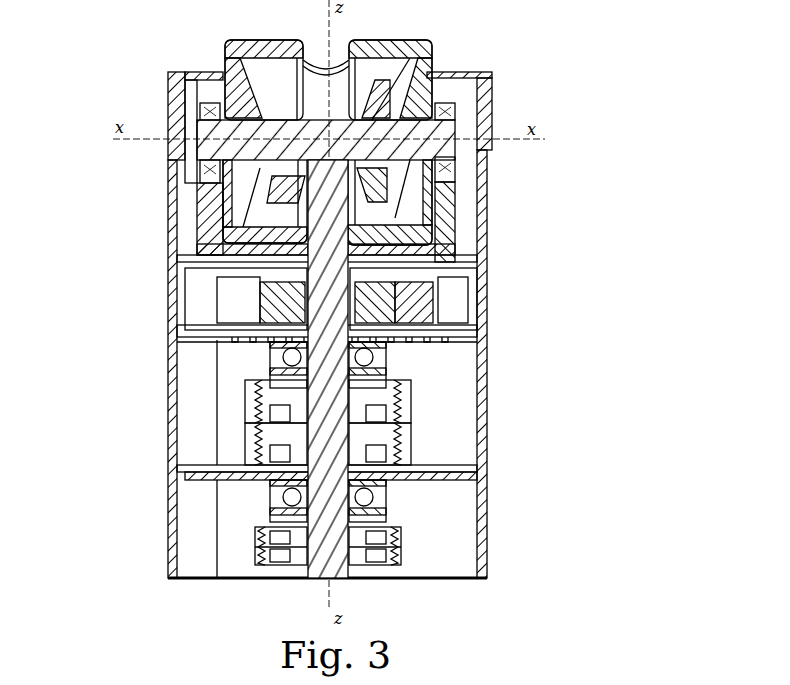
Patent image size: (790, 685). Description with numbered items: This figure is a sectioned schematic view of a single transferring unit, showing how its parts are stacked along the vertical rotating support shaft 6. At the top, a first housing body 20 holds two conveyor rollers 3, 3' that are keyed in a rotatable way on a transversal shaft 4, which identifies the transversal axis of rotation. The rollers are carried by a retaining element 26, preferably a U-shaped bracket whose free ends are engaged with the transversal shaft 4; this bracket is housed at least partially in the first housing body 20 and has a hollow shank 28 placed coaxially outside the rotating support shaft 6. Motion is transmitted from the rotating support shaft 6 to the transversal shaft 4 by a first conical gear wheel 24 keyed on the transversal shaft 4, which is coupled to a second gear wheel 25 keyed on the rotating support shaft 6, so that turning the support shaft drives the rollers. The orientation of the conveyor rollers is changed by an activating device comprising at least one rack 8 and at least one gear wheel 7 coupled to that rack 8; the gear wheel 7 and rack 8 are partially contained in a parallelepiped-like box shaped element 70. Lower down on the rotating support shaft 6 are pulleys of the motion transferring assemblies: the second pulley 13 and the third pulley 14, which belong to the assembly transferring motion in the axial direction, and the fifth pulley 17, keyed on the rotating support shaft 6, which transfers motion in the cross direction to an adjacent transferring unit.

The conveyor roller 3 is at (469, 67).
The conveyor roller 3' is at (203, 67).
The transversal shaft 4 is at (180, 120).
The rotating support shaft 6 is at (335, 578).
The gear wheel 7 is at (197, 295).
The rack 8 is at (415, 328).
The second pulley 13 is at (250, 389).
The third pulley 14 is at (250, 437).
The fifth pulley 17 is at (250, 543).
The first housing body 20 is at (168, 183).
The first conical gear wheel 24 is at (428, 74).
The second gear wheel 25 is at (410, 224).
The retaining element 26 is at (445, 193).
The hollow shank 28 is at (415, 322).
The box shaped element 70 is at (475, 270).